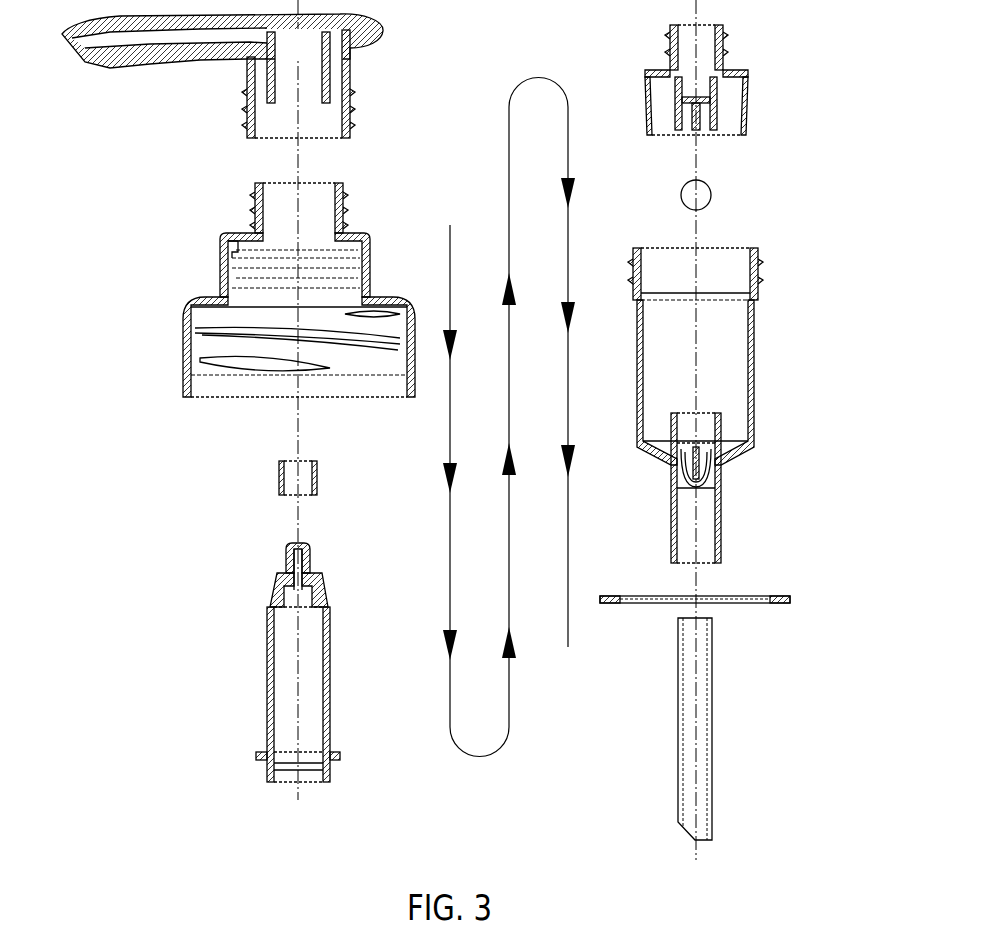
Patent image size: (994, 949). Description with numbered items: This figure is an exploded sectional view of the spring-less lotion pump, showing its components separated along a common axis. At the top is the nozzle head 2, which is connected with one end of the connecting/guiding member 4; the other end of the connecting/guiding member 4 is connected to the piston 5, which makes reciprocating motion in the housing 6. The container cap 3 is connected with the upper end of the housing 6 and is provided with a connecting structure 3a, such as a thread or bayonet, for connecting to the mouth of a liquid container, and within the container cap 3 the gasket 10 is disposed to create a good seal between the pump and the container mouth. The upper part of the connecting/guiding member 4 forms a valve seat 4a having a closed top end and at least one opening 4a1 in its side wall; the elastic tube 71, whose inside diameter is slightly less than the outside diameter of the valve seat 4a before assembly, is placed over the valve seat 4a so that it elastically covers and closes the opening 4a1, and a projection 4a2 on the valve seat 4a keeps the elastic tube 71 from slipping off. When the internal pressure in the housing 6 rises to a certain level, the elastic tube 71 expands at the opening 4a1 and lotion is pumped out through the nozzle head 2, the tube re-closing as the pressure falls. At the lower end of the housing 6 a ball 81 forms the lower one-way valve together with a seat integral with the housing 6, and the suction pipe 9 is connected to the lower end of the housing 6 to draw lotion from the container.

The nozzle head 2 is at (333, 78).
The container cap 3 is at (277, 290).
The connecting structure 3a is at (193, 334).
The elastic tube 71 is at (305, 478).
The connecting/guiding member 4 is at (307, 651).
The valve seat 4a is at (286, 549).
The opening 4a1 is at (307, 559).
The projection 4a2 is at (316, 574).
The piston 5 is at (702, 48).
The ball 81 is at (700, 193).
The housing 6 is at (722, 268).
The gasket 10 is at (743, 603).
The suction pipe 9 is at (700, 715).